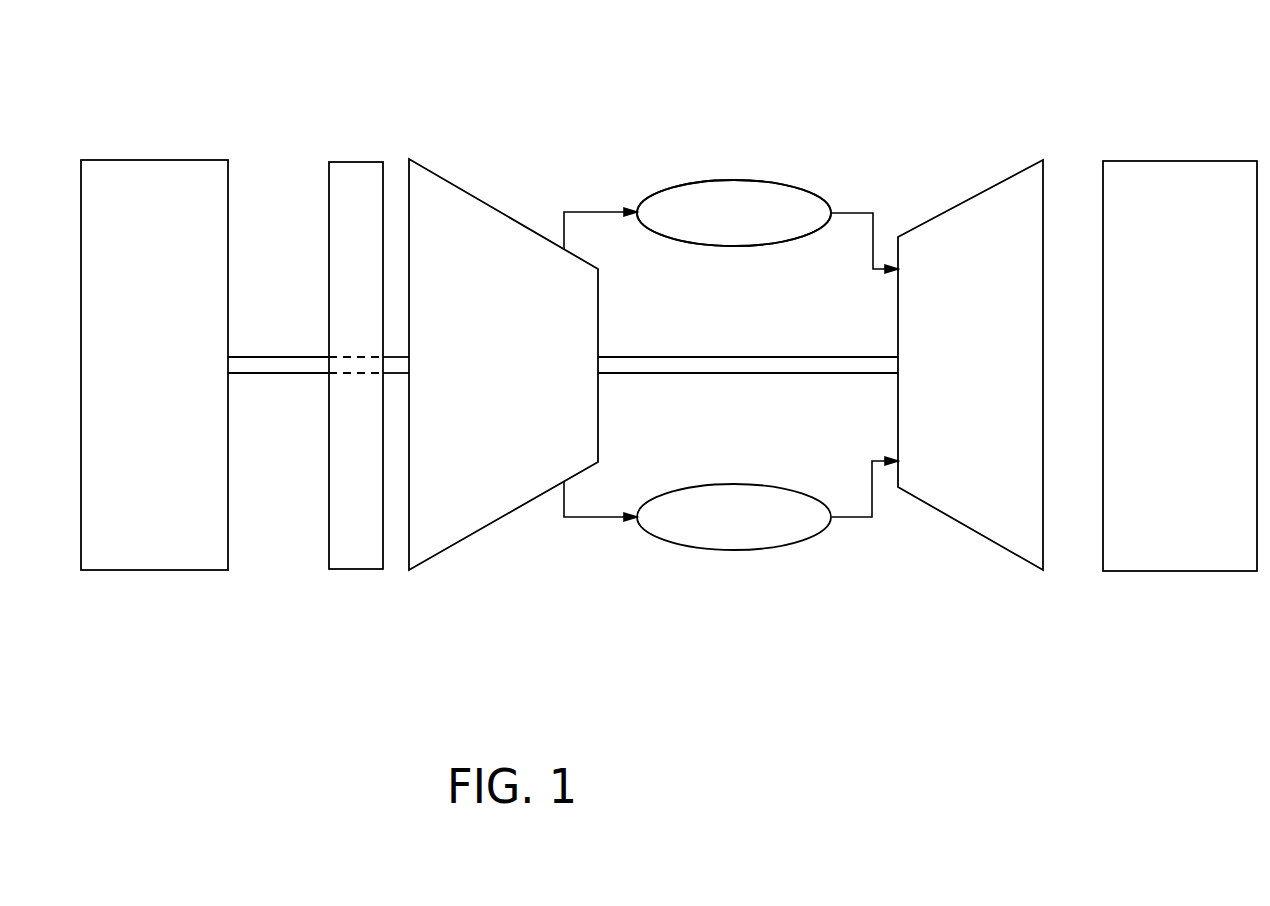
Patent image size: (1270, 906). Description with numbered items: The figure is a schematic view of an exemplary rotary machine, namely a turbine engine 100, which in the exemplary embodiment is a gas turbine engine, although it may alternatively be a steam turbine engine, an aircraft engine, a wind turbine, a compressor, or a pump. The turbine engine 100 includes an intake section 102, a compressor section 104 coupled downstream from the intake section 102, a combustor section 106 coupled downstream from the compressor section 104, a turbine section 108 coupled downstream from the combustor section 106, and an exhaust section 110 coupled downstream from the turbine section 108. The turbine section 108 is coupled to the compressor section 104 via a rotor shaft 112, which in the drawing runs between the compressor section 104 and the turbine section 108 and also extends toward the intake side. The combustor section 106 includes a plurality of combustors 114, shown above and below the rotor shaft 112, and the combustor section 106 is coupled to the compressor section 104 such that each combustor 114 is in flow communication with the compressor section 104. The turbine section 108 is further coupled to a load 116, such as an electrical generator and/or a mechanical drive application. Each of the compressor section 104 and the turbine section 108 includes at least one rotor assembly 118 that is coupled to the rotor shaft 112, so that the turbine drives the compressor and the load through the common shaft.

The turbine engine 100 is at (880, 86).
The intake section 102 is at (353, 162).
The compressor section 104 is at (435, 173).
The combustor section 106 is at (774, 166).
The turbine section 108 is at (1005, 178).
The exhaust section 110 is at (1177, 161).
The rotor shaft 112 is at (730, 374).
The combustor 114 is at (757, 226).
The load 116 is at (155, 160).
The rotor assembly 118 is at (507, 200).